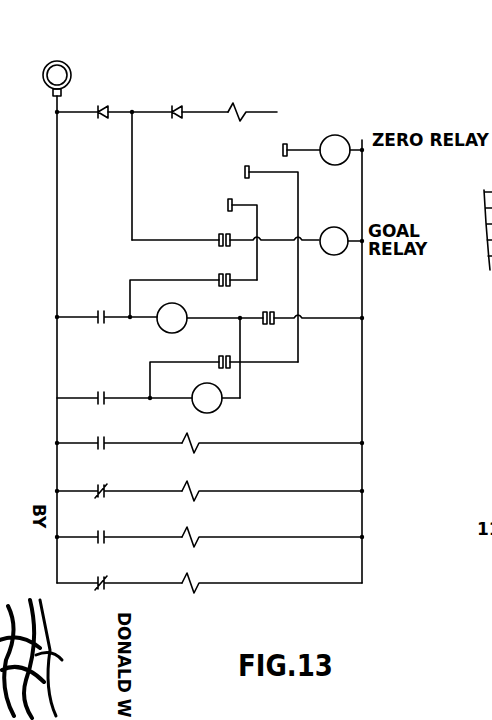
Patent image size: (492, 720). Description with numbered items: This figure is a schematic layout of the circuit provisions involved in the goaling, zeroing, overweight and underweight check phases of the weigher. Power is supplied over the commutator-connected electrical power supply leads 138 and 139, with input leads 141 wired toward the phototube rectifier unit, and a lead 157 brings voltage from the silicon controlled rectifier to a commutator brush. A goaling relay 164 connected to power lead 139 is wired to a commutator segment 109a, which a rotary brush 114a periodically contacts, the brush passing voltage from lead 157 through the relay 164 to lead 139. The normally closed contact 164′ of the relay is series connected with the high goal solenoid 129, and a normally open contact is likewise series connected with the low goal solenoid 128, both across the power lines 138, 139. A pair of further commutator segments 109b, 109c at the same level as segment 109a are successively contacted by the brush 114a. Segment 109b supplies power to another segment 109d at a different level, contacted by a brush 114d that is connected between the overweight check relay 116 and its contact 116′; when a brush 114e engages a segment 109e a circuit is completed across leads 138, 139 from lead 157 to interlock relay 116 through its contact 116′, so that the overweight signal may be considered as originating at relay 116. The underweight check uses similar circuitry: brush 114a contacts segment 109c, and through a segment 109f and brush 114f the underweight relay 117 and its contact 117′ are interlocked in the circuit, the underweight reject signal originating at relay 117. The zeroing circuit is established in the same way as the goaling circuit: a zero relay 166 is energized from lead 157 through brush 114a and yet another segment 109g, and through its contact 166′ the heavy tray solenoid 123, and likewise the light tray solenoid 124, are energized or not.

The input leads 141 is at (240, 106).
The lead 157 is at (148, 224).
The commutator segment 109g is at (286, 144).
The zero relay 166 is at (343, 137).
The commutator segment 109c is at (246, 166).
The commutator segment 109b is at (230, 199).
The commutator segment 109a is at (228, 234).
The rotary brush 114a is at (219, 243).
The goaling relay 164 is at (340, 253).
The brush 114d is at (219, 278).
The commutator segment 109d is at (231, 279).
The contact 116′ is at (98, 311).
The overweight check relay 116 is at (185, 311).
The brush 114e is at (265, 312).
The commutator segment 109e is at (290, 318).
The power lead 139 is at (364, 334).
The brush 114f is at (222, 356).
The commutator segment 109f is at (232, 366).
The contact 117′ is at (98, 392).
The underweight check relay 117 is at (182, 384).
The power lead 138 is at (56, 437).
The normally closed contact 164′ is at (106, 427).
The high goal solenoid 129 is at (210, 442).
The low goal solenoid 128 is at (215, 489).
The zero relay contact 166′ is at (106, 520).
The heavy tray solenoid 123 is at (185, 529).
The light tray solenoid 124 is at (185, 575).